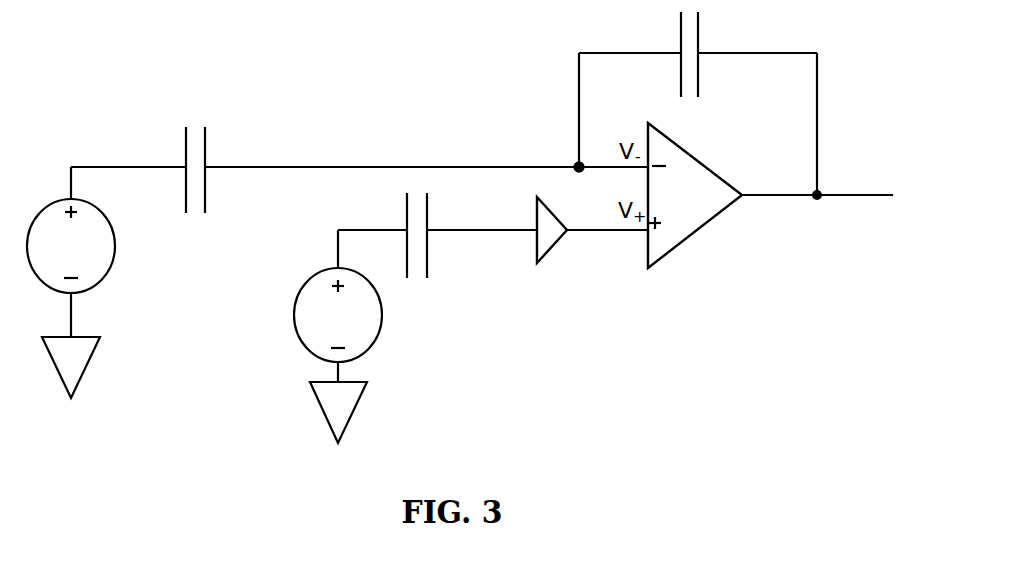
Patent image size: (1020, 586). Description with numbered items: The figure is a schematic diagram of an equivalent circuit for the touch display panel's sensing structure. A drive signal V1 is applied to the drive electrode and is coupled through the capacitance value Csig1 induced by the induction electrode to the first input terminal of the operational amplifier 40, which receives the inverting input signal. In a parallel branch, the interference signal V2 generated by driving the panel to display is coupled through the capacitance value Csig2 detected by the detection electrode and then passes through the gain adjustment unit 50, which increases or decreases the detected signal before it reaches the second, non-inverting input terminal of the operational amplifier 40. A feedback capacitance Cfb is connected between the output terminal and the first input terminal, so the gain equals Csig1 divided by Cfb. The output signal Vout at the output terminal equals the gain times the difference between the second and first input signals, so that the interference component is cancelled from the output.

The operational amplifier 40 is at (697, 233).
The gain adjustment unit 50 is at (548, 252).
The drive signal V1 is at (71, 298).
The interference signal V2 is at (338, 355).
The capacitance value induced by the induction electrode Csig1 is at (206, 188).
The capacitance value detected by the detection electrode Csig2 is at (425, 253).
The feedback capacitance Cfb is at (712, 62).
The output signal Vout is at (817, 211).